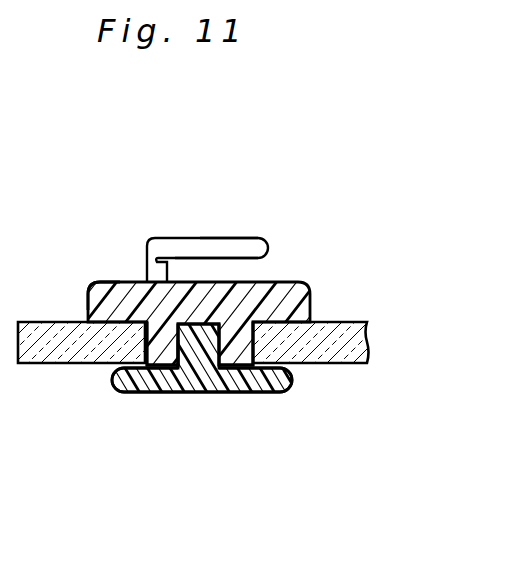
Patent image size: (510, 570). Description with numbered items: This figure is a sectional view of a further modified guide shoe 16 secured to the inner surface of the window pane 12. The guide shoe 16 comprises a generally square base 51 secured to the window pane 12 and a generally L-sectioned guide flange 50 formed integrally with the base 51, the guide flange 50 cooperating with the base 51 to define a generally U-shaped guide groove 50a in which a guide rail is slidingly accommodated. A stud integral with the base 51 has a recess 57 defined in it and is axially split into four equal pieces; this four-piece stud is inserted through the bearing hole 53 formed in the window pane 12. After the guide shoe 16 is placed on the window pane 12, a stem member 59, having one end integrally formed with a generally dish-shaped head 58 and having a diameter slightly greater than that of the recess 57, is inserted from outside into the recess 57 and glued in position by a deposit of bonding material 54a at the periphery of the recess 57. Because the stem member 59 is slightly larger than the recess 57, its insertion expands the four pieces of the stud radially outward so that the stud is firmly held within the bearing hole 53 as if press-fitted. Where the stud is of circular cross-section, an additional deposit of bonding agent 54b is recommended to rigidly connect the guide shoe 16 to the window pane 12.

The window pane 12 is at (346, 354).
The guide shoe 16 is at (254, 233).
The guide flange 50 is at (192, 250).
The guide groove 50a is at (243, 268).
The base 51 is at (110, 282).
The bearing hole 53 is at (253, 393).
The deposit of bonding material 54a is at (217, 393).
The deposit of bonding agent 54b is at (155, 324).
The recess 57 is at (264, 284).
The dish-shaped head 58 is at (182, 407).
The stem member 59 is at (198, 350).